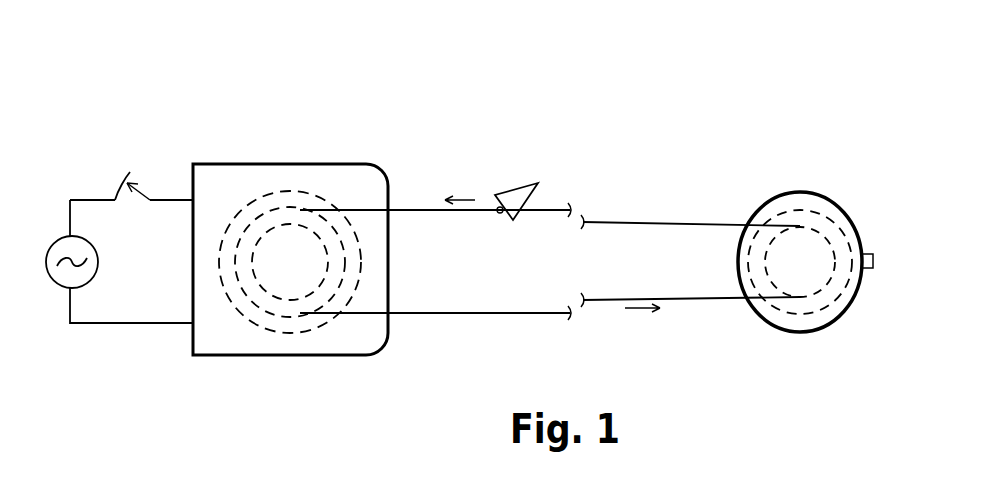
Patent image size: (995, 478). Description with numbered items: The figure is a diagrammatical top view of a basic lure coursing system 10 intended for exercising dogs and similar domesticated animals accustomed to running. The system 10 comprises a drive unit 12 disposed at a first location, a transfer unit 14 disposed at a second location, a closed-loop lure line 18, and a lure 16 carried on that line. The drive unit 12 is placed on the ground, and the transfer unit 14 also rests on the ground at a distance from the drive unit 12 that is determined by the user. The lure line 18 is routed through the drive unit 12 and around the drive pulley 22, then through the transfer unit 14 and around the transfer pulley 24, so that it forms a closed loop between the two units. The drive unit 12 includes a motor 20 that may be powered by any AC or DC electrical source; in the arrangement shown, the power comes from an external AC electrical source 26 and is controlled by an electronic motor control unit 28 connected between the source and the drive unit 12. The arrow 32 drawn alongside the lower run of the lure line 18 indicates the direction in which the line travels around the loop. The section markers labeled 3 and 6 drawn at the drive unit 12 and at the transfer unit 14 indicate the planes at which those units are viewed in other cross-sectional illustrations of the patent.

The lure coursing system 10 is at (518, 48).
The drive unit 12 is at (237, 164).
The transfer unit 14 is at (783, 192).
The lure 16 is at (533, 182).
The lure line 18 is at (453, 314).
The motor 20 is at (275, 297).
The drive pulley 22 is at (310, 188).
The transfer pulley 24 is at (790, 313).
The external AC electrical source 26 is at (50, 240).
The electronic motor control unit 28 is at (118, 180).
The signal direction arrow 32 is at (652, 317).
The section line 3- 3 is at (161, 249).
The section line 6- 6 is at (696, 262).